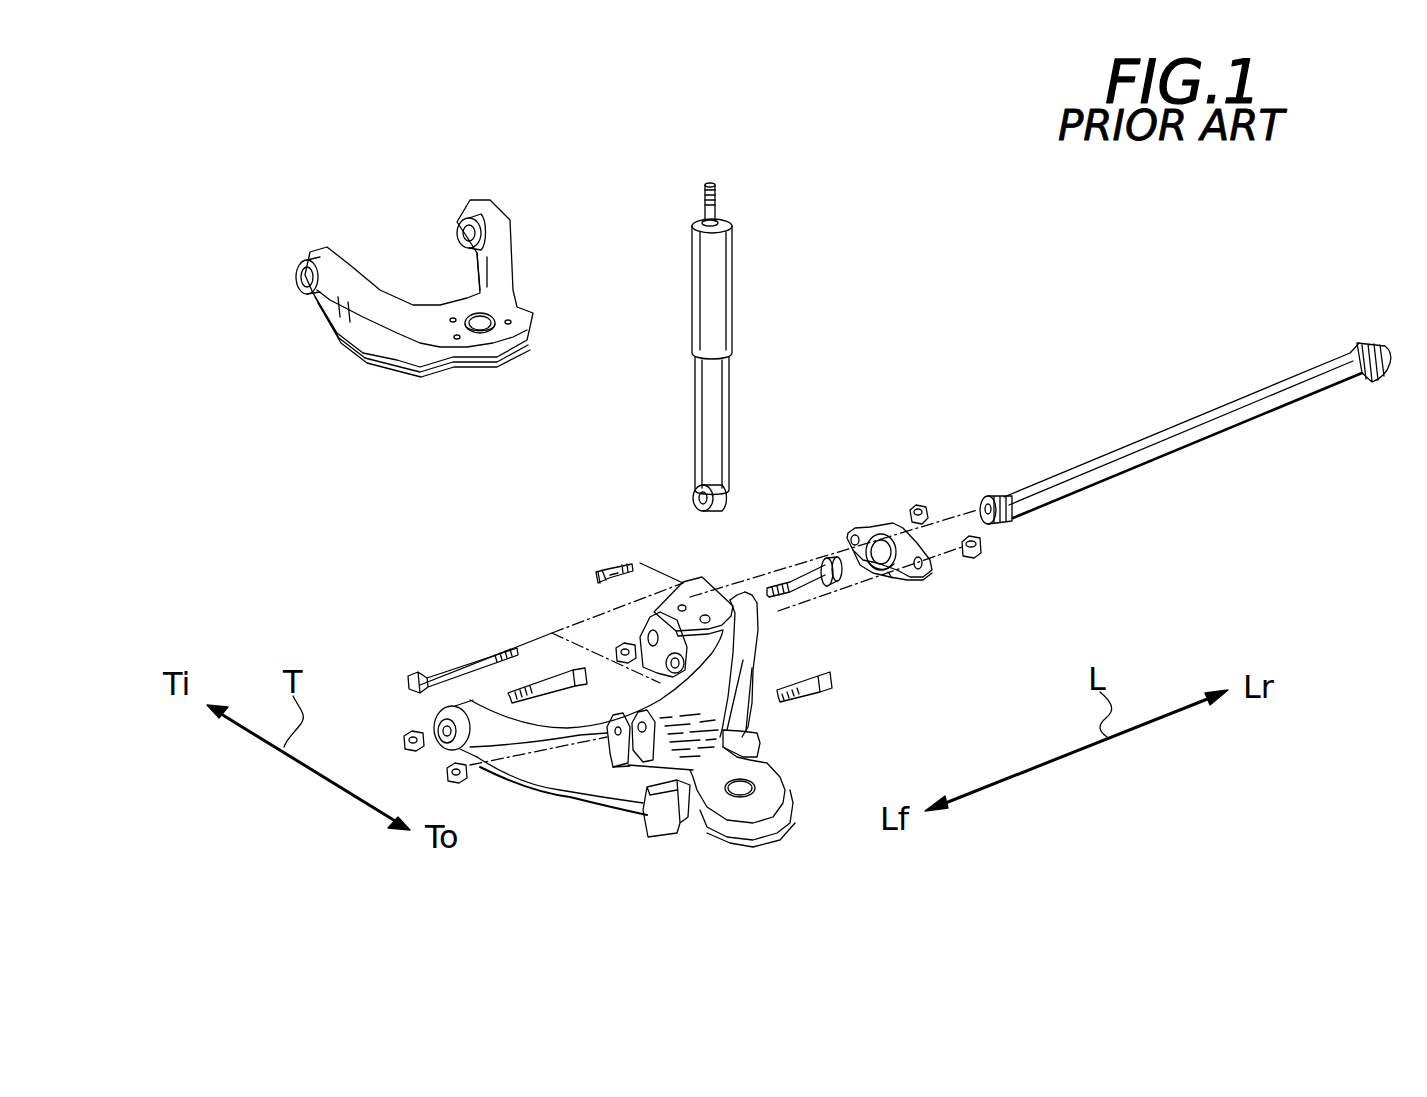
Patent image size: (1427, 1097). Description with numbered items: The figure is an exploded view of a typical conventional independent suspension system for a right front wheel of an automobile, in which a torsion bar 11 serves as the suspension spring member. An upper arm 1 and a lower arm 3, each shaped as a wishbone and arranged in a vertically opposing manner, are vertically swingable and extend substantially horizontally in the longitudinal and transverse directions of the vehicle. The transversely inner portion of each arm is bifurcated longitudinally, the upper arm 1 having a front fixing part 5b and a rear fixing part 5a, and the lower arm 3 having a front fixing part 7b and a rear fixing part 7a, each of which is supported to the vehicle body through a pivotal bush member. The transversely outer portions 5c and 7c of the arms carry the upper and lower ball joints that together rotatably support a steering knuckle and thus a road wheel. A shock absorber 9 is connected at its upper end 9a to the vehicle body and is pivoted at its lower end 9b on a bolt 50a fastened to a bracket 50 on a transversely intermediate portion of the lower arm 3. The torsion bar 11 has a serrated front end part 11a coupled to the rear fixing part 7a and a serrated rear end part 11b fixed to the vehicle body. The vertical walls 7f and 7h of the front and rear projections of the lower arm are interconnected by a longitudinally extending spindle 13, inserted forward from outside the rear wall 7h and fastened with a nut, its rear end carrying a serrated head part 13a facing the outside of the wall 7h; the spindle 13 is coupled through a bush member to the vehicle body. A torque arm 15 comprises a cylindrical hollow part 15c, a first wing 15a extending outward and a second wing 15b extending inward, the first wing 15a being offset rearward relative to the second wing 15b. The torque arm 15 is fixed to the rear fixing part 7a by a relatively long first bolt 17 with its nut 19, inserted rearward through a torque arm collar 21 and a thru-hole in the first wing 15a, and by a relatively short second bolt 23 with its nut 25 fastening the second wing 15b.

The upper arm 1 is at (516, 248).
The rear fixing part 5a is at (478, 210).
The front fixing part 5b is at (326, 257).
The transversely outer portion 5c is at (512, 308).
The lower arm 3 is at (757, 717).
The rear fixing part 7a is at (708, 583).
The front fixing part 7b is at (430, 716).
The transversely outer portion 7c is at (727, 827).
The vertical wall 7f is at (648, 620).
The vertical wall 7h is at (757, 612).
The shock absorber 9 is at (716, 267).
The upper end 9a is at (718, 195).
The lower end 9b is at (722, 489).
The torsion bar 11 is at (1088, 462).
The serrated front end part 11a is at (988, 496).
The serrated rear end part 11b is at (1378, 372).
The spindle 13 is at (800, 572).
The serrated head part 13a is at (835, 588).
The torque arm 15 is at (886, 528).
The first wing 15a is at (920, 568).
The second wing 15b is at (852, 535).
The cylindrical hollow part 15c is at (887, 580).
The first bolt 17 is at (458, 668).
The nut 19 is at (980, 554).
The torque arm collar 21 is at (667, 628).
The second bolt 23 is at (612, 567).
The nut 25 is at (920, 503).
The bracket 50 is at (620, 753).
The bolt 50a is at (838, 690).